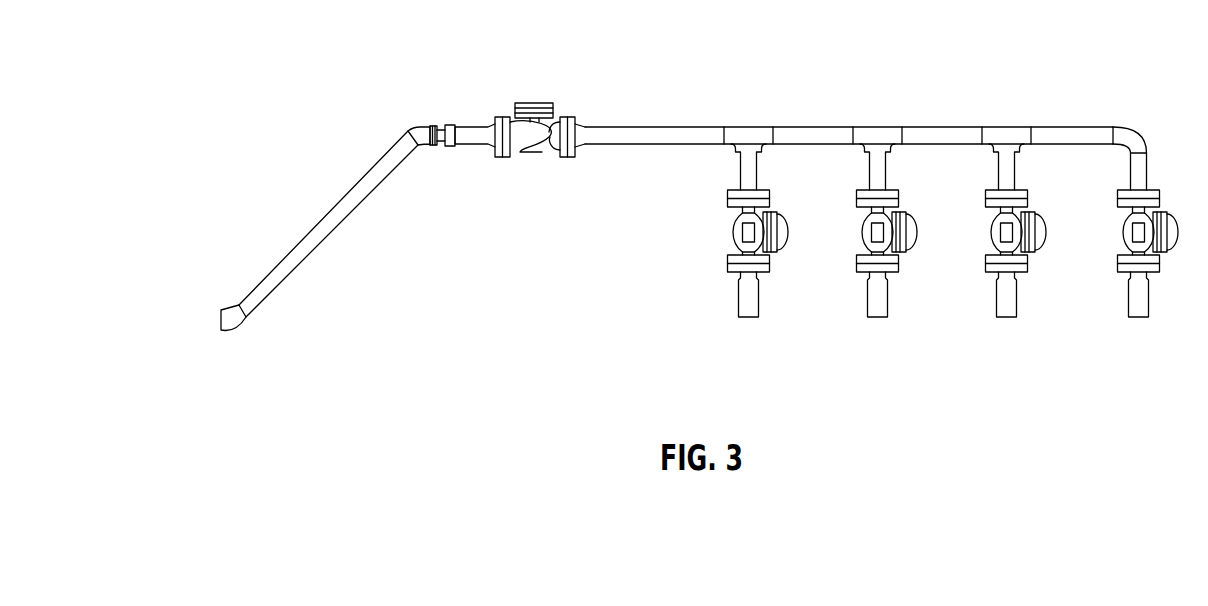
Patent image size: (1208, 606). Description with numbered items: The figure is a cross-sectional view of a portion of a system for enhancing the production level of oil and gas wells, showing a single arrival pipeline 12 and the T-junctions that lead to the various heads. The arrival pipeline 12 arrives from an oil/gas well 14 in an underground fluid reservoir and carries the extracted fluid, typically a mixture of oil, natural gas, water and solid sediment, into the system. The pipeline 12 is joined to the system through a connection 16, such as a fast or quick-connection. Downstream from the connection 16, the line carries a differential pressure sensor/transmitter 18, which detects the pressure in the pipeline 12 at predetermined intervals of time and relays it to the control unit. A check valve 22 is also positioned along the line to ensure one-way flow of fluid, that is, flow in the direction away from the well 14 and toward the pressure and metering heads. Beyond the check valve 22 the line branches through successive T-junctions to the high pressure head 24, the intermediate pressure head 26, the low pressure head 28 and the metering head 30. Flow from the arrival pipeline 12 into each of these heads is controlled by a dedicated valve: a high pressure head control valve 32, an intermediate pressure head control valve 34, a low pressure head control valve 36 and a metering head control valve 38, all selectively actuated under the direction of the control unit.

The arrival pipeline 12 is at (318, 218).
The oil/gas well 14 is at (203, 345).
The connection 16 is at (412, 130).
The differential pressure sensor/transmitter 18 is at (468, 125).
The check valve 22 is at (537, 104).
The high pressure head 24 is at (745, 318).
The intermediate pressure head 26 is at (856, 313).
The low pressure head 28 is at (985, 313).
The metering head 30 is at (1117, 313).
The high pressure head control valve 32 is at (732, 229).
The intermediate pressure head control valve 34 is at (857, 231).
The low pressure head control valve 36 is at (986, 231).
The metering head control valve 38 is at (1118, 231).